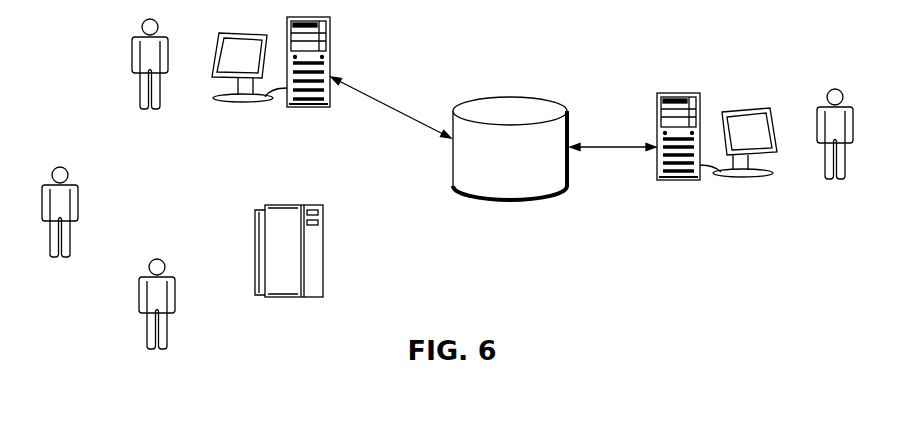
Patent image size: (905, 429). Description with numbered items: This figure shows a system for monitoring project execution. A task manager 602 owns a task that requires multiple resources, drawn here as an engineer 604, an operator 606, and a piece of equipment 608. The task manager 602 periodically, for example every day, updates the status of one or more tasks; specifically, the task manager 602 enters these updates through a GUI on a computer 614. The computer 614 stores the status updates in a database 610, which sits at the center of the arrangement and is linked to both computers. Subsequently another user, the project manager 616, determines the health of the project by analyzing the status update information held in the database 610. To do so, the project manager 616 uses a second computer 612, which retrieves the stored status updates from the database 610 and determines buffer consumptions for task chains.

The task manager 602 is at (148, 98).
The engineer 604 is at (59, 236).
The operator 606 is at (157, 328).
The equipment 608 is at (287, 276).
The database 610 is at (510, 148).
The computer 612 is at (717, 166).
The computer 614 is at (271, 87).
The project manager 616 is at (833, 168).